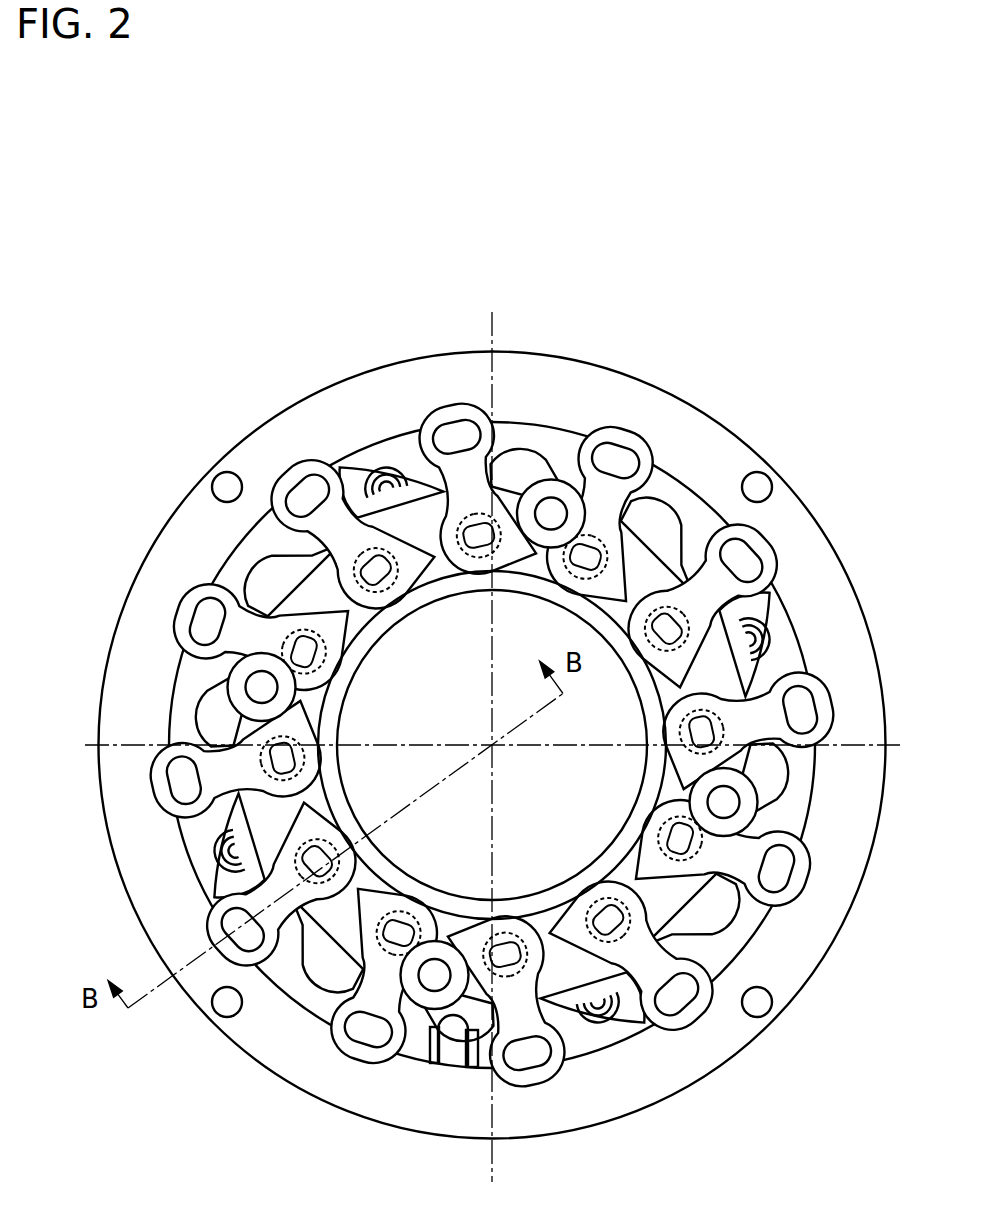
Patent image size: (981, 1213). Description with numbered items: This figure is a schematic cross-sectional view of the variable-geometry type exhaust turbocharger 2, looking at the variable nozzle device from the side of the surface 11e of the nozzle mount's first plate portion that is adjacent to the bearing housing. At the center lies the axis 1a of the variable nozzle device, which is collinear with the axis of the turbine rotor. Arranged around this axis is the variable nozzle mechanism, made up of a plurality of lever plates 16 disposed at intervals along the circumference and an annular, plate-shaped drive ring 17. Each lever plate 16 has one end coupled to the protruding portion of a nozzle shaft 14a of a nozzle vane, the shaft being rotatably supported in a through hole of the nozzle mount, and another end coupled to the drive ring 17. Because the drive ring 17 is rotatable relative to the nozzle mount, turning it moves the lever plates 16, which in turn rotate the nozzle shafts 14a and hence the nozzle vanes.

The variable-geometry type exhaust turbocharger 2 is at (195, 374).
The surface of the first plate portion 11e is at (635, 1085).
The drive ring 17 is at (677, 500).
The lever plate 16 is at (765, 537).
The nozzle shaft 14a is at (705, 727).
The axis of the variable nozzle device 1a is at (492, 745).